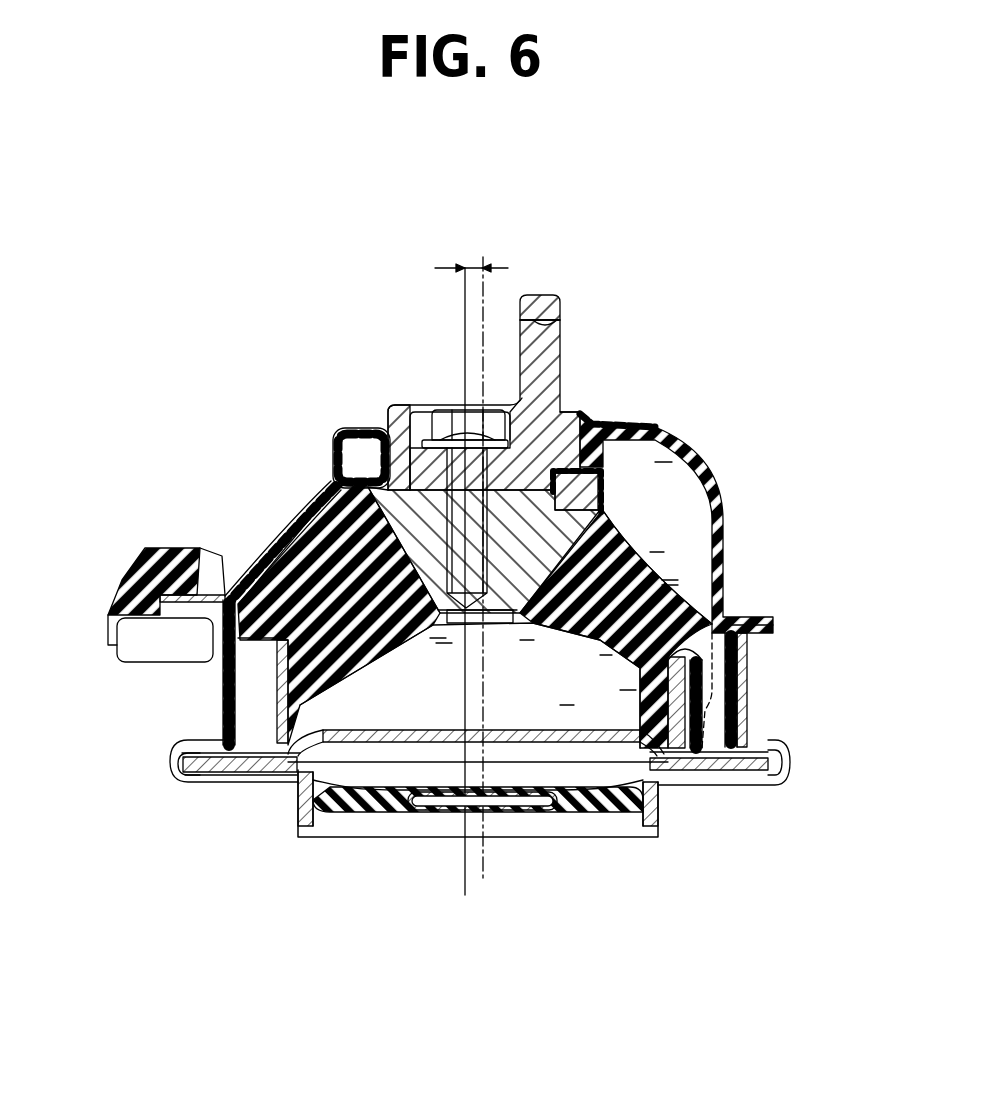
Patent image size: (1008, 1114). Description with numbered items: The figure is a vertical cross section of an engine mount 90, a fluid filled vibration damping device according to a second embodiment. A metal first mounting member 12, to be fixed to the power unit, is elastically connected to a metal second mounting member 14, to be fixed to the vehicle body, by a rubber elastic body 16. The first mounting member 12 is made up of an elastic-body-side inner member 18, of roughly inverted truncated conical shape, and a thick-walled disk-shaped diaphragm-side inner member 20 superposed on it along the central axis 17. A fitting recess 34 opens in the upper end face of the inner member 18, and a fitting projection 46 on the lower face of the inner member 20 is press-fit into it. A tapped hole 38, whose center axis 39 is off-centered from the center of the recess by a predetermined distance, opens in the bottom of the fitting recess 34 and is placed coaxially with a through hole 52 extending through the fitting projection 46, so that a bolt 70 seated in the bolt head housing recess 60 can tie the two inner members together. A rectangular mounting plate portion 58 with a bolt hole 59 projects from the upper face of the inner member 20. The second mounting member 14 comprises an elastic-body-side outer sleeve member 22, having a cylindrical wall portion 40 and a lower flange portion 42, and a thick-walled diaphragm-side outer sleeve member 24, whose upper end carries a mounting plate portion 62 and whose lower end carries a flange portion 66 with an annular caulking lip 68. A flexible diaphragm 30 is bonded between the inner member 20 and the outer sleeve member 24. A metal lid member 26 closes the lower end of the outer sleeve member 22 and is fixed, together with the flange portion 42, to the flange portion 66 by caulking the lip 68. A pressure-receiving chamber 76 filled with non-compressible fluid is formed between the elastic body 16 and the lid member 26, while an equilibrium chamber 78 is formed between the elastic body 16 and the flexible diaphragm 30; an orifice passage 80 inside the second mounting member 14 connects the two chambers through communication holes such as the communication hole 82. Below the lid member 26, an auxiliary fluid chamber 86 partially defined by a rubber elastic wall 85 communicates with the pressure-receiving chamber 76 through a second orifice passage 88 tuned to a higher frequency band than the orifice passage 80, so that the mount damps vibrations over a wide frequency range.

The engine mount 90 is at (246, 383).
The center axis of the tapped hole 39 is at (463, 295).
The central axis 17 is at (484, 882).
The first mounting member 12 is at (733, 350).
The fitting recess 34 is at (568, 420).
The mounting plate portion 58 is at (548, 300).
The bolt hole 59 is at (560, 335).
The diaphragm-side inner member 20 is at (577, 416).
The elastic-body-side inner member 18 is at (614, 456).
The bolt head housing recess 60 is at (407, 403).
The through hole 52 is at (453, 530).
The nut 70 is at (460, 422).
The fitting projection 46 is at (420, 480).
The rubber elastic body 16 is at (340, 525).
The tapped hole 38 is at (340, 495).
The equilibrium chamber 78 is at (684, 518).
The pressure-receiving chamber 76 is at (564, 700).
The flexible diaphragm 30 is at (718, 513).
The communication hole 82 is at (737, 633).
The second mounting member 14 is at (97, 678).
The diaphragm-side outer sleeve member 24 is at (222, 684).
The elastic-body-side outer sleeve member 22 is at (277, 712).
The mounting plate portion 62 is at (185, 618).
The cylindrical wall portion 40 is at (683, 685).
The orifice passage 80 is at (713, 717).
The lid member 26 is at (400, 735).
The flange portion 42 is at (743, 757).
The flange portion 66 is at (187, 742).
The annular caulking lip 68 is at (777, 778).
The rubber elastic wall 85 is at (377, 807).
The auxiliary fluid chamber 86 is at (567, 780).
The second orifice passage 88 is at (468, 735).